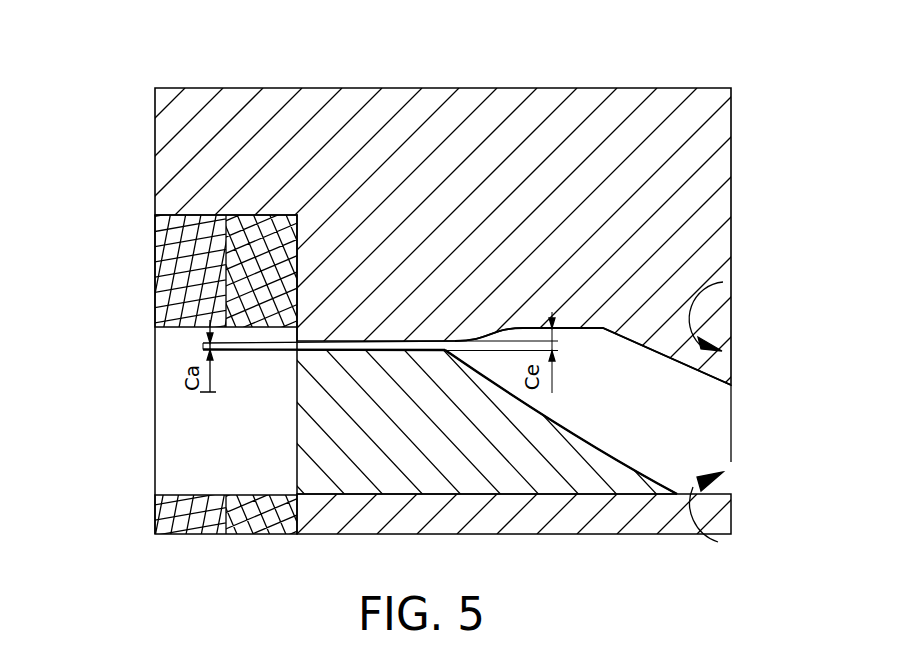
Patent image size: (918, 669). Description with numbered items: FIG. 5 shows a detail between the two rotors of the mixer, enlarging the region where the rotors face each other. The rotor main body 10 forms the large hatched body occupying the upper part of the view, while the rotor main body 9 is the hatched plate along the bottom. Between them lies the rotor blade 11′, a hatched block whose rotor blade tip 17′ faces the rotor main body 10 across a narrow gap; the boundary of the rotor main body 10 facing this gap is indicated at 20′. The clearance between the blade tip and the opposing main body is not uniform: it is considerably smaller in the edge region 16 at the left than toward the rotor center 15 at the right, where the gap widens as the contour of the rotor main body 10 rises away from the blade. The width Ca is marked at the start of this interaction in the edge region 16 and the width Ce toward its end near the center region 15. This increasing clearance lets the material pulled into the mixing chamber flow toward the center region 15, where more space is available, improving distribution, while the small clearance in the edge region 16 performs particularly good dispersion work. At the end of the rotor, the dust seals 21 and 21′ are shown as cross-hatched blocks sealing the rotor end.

The rotor main body 9 is at (710, 517).
The rotor main body 10 is at (523, 293).
The rotor blade 11' is at (357, 432).
The center region 15 is at (578, 342).
The edge region 16 is at (294, 363).
The rotor blade tip 17' is at (324, 461).
The upper channel surface 20' is at (329, 186).
The dust seal 21 is at (202, 271).
The dust seal 21' is at (197, 515).